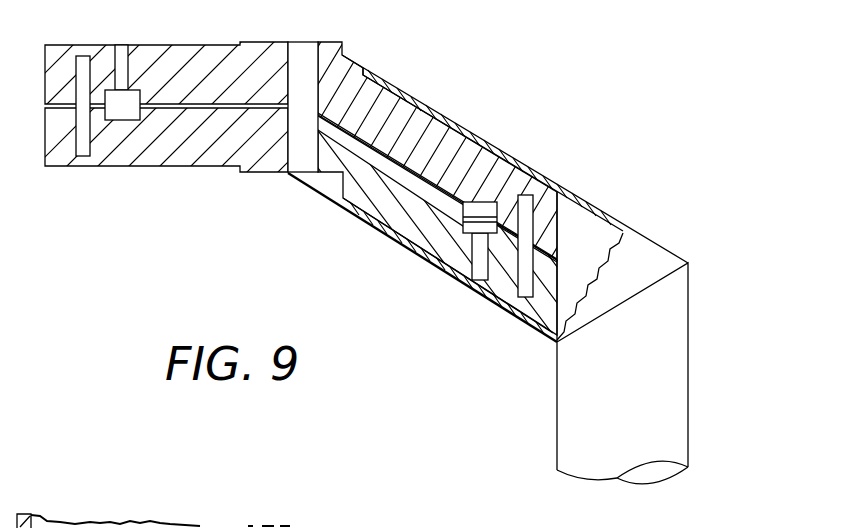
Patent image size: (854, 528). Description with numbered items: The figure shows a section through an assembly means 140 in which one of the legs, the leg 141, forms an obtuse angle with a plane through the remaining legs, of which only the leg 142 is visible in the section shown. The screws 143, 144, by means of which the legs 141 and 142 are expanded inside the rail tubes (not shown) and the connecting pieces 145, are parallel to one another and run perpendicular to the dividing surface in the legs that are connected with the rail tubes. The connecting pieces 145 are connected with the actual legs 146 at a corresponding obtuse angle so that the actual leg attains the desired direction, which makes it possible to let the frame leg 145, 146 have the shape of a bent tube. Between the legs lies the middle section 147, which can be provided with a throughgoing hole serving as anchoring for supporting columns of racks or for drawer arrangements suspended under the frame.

The assembly means 140 is at (347, 68).
The leg 141 is at (447, 143).
The leg 142 is at (182, 72).
The screw 143 is at (478, 258).
The screw 144 is at (121, 62).
The connecting piece 145 is at (592, 242).
The actual leg 146 is at (673, 395).
The middle section 147 is at (305, 140).